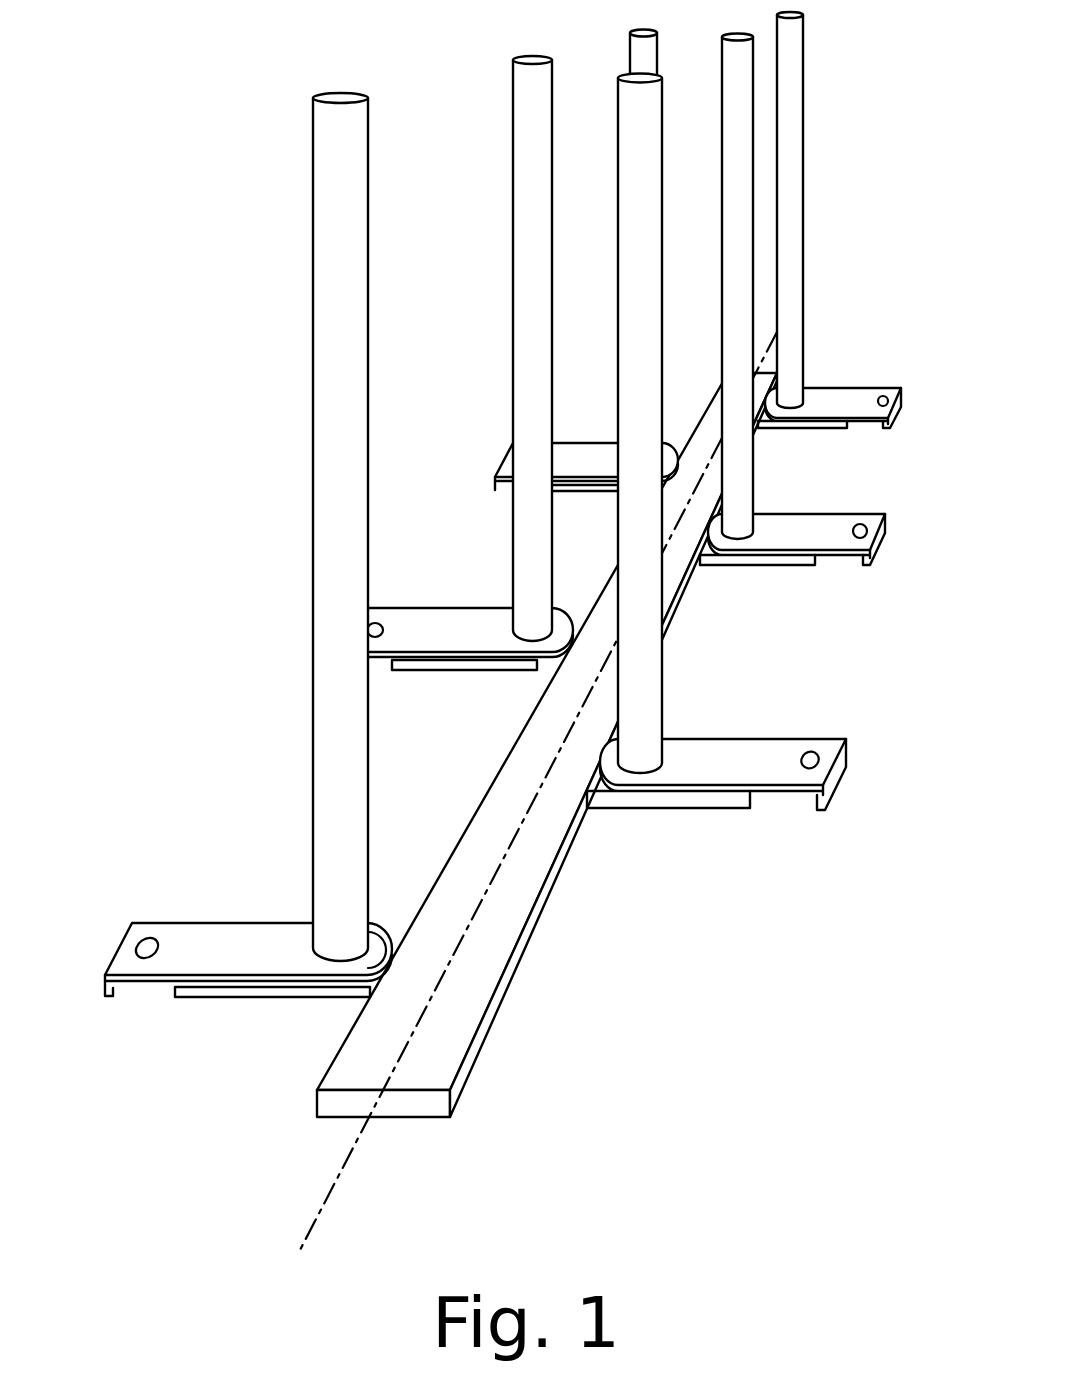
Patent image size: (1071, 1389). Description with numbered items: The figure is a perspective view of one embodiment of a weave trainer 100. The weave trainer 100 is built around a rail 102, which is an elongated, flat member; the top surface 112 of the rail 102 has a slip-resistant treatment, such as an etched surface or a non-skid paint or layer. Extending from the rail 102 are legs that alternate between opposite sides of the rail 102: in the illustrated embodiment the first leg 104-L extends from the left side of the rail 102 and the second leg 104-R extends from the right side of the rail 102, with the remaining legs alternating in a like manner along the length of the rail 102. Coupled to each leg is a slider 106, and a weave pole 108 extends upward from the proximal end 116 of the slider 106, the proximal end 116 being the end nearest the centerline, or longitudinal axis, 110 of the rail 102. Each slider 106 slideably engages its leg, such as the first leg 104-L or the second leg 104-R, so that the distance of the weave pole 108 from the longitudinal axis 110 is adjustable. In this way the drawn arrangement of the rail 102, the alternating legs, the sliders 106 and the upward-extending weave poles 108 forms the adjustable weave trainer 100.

The weave trainer 100 is at (174, 108).
The rail 102 is at (547, 745).
The first leg 104-L is at (253, 996).
The second leg 104-R is at (718, 806).
The slider 106 is at (222, 922).
The weave pole 108 is at (313, 424).
The longitudinal axis 110 is at (325, 1207).
The top surface 112 is at (507, 902).
The proximal end 116 is at (403, 931).